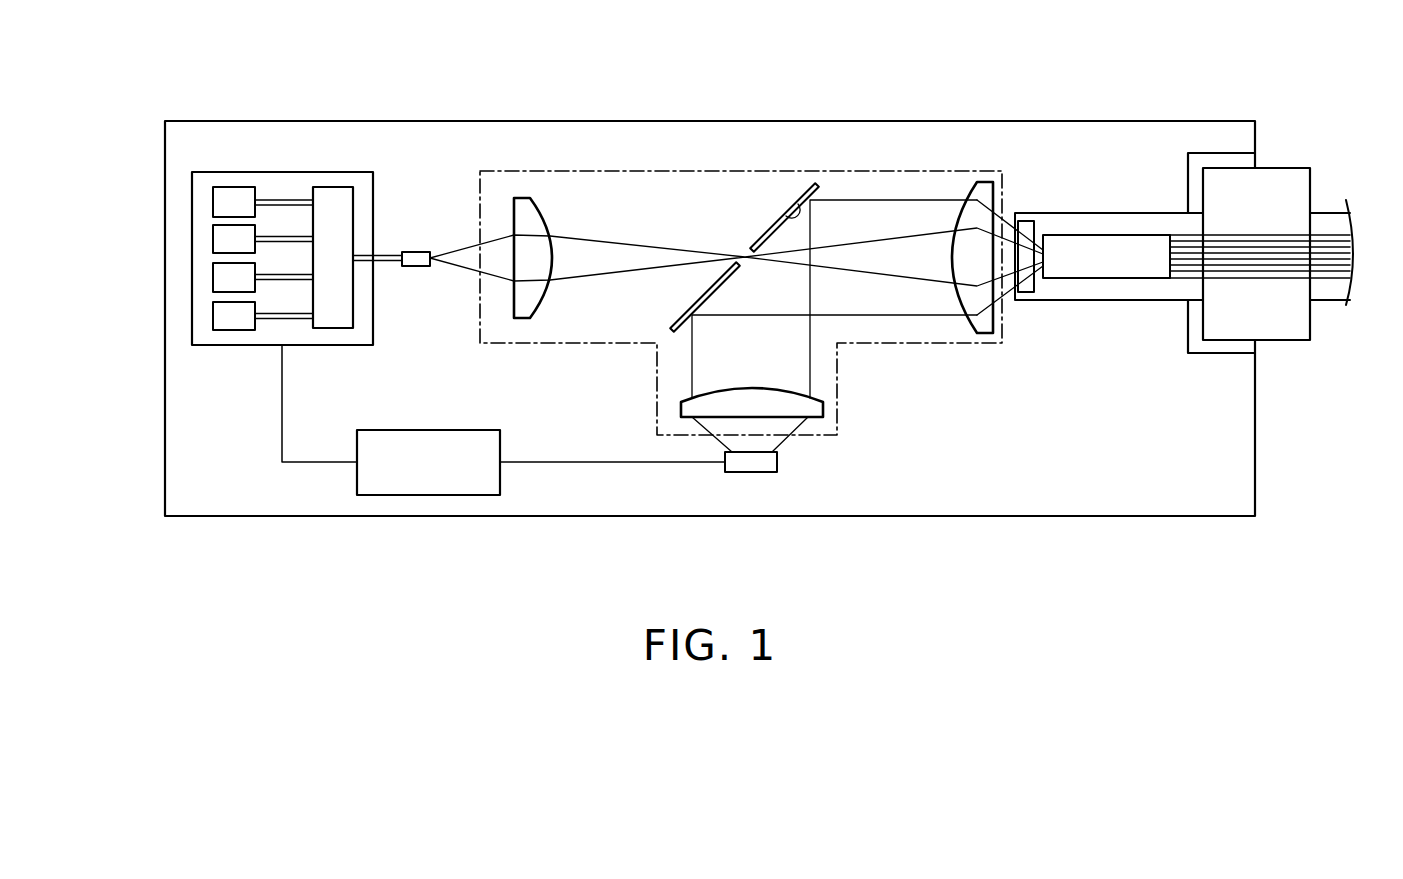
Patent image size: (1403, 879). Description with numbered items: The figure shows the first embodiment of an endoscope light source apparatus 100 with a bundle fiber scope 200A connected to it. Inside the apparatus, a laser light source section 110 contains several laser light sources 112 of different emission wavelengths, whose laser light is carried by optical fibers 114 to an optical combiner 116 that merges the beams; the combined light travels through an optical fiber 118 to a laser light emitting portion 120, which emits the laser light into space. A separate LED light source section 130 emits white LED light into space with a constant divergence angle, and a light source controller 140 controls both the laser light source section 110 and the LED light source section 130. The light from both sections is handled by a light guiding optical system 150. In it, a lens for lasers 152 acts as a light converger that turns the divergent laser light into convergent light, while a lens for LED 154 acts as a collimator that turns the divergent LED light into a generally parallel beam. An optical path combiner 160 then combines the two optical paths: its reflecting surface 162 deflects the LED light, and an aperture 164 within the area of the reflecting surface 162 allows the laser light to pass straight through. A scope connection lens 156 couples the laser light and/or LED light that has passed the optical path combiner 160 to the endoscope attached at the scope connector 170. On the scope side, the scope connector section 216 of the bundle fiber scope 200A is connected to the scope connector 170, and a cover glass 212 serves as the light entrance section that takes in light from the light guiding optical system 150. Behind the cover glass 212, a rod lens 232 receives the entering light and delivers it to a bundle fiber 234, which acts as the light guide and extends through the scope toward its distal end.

The endoscope light source apparatus 100 is at (1085, 82).
The laser light source section 110 is at (226, 172).
The laser light sources 112 is at (212, 239).
The optical fibers 114 is at (297, 236).
The optical combiner 116 is at (330, 187).
The optical fiber 118 is at (393, 265).
The laser light emitting portion 120 is at (415, 252).
The LED light source section 130 is at (745, 472).
The light source controller 140 is at (430, 495).
The light guiding optical system 150 is at (897, 171).
The lens for lasers 152 is at (522, 198).
The lens for LED 154 is at (815, 417).
The scope connection lens 156 is at (983, 182).
The optical path combiner 160 is at (803, 202).
The reflecting surface 162 is at (788, 212).
The aperture 164 is at (744, 256).
The scope connector 170 is at (1222, 153).
The bundle fiber scope 200A is at (1180, 247).
The cover glass 212 is at (1025, 300).
The scope connector section 216 is at (1293, 342).
The rod lens 232 is at (1113, 278).
The bundle fiber 234 is at (1280, 280).